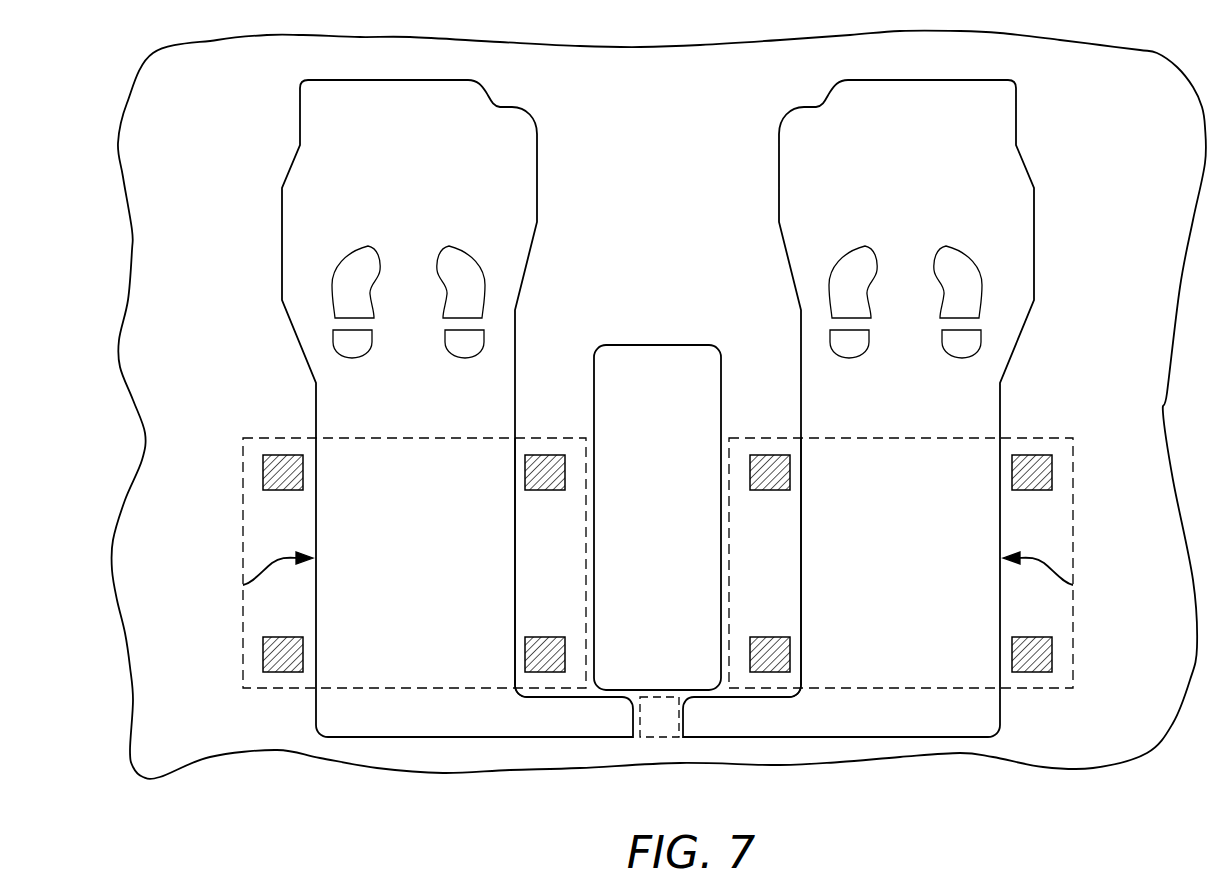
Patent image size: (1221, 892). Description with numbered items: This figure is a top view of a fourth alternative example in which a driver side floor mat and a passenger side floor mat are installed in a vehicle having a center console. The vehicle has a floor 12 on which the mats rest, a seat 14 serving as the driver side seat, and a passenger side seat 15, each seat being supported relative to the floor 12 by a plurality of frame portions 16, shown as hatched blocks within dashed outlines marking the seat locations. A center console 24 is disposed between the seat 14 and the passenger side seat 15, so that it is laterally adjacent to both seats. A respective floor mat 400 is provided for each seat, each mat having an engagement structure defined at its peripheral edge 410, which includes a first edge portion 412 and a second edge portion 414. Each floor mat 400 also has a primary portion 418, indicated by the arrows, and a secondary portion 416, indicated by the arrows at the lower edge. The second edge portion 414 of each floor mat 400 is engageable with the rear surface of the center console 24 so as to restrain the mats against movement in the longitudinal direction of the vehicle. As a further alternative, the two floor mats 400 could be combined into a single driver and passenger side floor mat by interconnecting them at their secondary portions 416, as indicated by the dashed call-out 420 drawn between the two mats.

The floor mat 400 is at (1033, 105).
The peripheral edge 410 is at (1035, 193).
The first edge portion 412 is at (513, 622).
The second edge portion 414 is at (552, 698).
The secondary portion 416 is at (540, 739).
The primary portion 418 is at (243, 585).
The call-out 420 is at (659, 737).
The center console 24 is at (656, 345).
The floor 12 is at (659, 690).
The seat 14 is at (252, 437).
The passenger side seat 15 is at (1062, 437).
The frame portions 16 is at (288, 491).